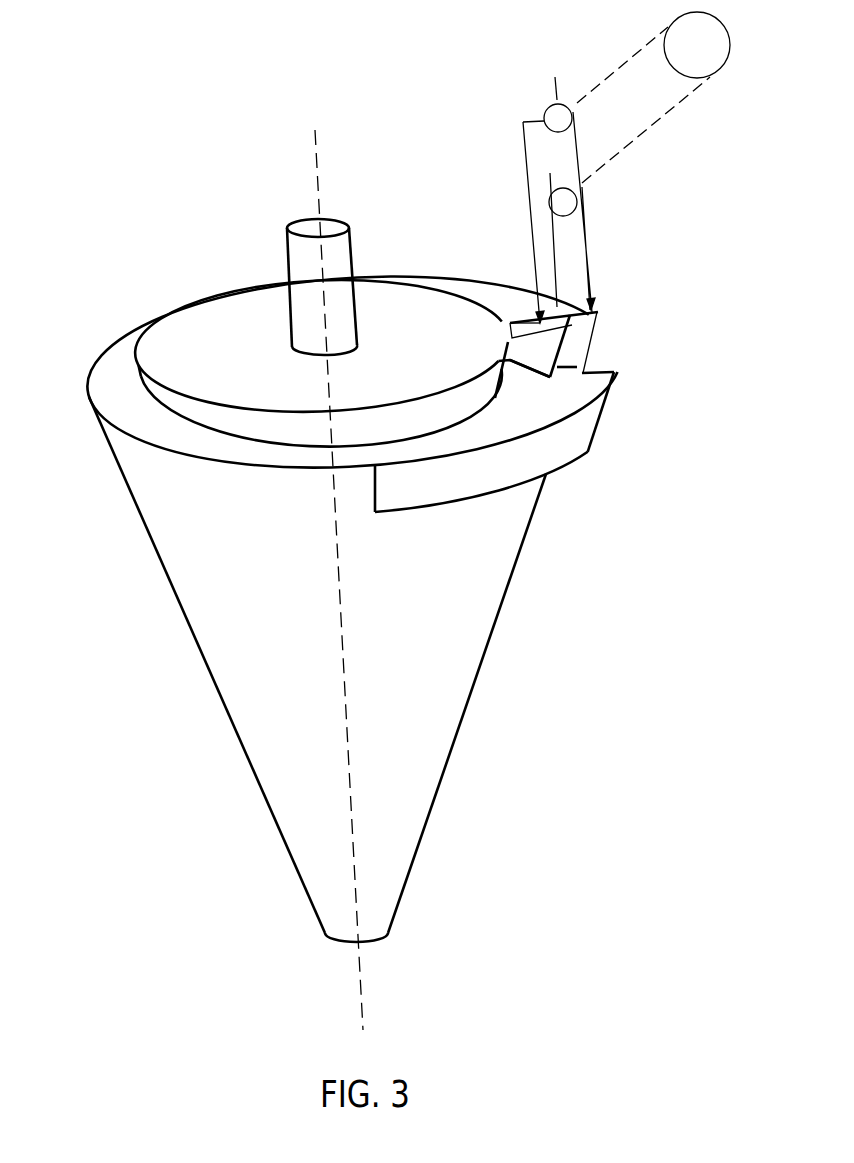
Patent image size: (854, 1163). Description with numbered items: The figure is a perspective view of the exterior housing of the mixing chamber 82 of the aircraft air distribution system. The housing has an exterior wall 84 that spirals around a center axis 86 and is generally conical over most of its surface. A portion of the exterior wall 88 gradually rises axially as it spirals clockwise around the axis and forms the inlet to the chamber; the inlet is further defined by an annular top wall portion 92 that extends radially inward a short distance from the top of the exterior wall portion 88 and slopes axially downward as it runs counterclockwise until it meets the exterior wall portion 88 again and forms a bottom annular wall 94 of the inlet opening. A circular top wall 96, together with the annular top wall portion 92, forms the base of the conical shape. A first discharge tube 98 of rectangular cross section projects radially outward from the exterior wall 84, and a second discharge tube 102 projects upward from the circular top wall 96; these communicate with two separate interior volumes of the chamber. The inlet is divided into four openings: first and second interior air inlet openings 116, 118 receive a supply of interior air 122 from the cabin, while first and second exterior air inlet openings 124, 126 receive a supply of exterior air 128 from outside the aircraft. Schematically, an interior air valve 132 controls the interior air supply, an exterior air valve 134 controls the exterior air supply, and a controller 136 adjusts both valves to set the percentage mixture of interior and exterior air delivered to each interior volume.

The mixing chamber 82 is at (198, 650).
The exterior wall 84 is at (252, 703).
The center axis 86 is at (316, 155).
The exterior wall portion 88 is at (578, 325).
The annular top wall portion 92 is at (476, 284).
The bottom annular wall 94 is at (587, 365).
The circular top wall 96 is at (205, 322).
The first discharge tube 98 is at (583, 437).
The second discharge tube 102 is at (295, 262).
The first interior air inlet opening 116 is at (606, 313).
The second interior air inlet opening 118 is at (519, 322).
The supply of interior air 122 is at (562, 182).
The first exterior air inlet opening 124 is at (560, 375).
The second exterior air inlet opening 126 is at (528, 378).
The supply of exterior air 128 is at (556, 82).
The interior air valve 132 is at (570, 201).
The exterior air valve 134 is at (556, 117).
The controller 136 is at (708, 34).